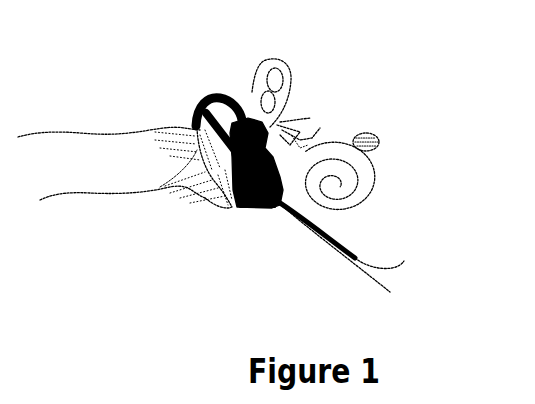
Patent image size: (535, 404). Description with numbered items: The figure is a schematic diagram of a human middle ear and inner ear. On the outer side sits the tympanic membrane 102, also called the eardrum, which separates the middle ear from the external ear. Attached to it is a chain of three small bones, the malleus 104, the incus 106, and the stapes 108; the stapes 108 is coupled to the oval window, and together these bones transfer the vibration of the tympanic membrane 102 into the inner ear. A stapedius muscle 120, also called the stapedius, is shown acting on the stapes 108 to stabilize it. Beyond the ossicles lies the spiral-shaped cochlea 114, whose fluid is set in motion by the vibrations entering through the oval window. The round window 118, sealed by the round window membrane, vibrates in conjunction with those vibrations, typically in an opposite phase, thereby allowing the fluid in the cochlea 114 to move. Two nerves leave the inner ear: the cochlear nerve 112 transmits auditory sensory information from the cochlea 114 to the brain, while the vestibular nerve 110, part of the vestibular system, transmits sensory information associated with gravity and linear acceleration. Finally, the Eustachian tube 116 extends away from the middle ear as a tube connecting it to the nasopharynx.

The tympanic membrane 102 is at (205, 203).
The malleus 104 is at (208, 118).
The incus 106 is at (229, 100).
The stapes 108 is at (279, 127).
The vestibular nerve 110 is at (300, 123).
The cochlear nerve 112 is at (380, 143).
The cochlea 114 is at (368, 190).
The Eustachian tube 116 is at (356, 263).
The round window 118 is at (267, 209).
The stapedius muscle 120 is at (250, 122).